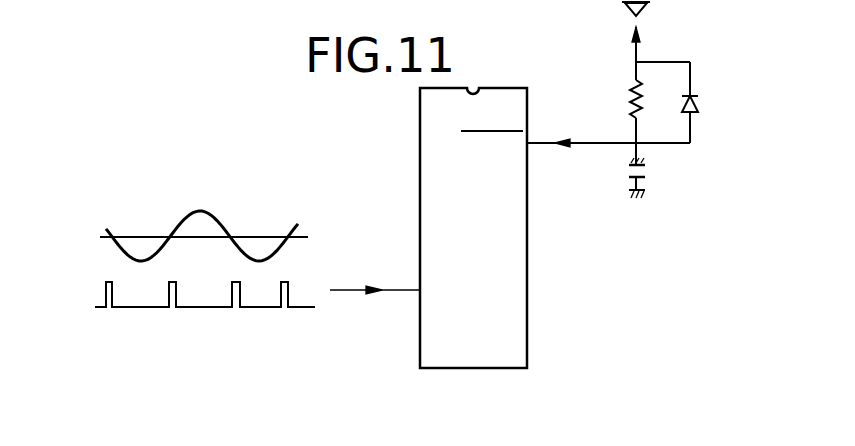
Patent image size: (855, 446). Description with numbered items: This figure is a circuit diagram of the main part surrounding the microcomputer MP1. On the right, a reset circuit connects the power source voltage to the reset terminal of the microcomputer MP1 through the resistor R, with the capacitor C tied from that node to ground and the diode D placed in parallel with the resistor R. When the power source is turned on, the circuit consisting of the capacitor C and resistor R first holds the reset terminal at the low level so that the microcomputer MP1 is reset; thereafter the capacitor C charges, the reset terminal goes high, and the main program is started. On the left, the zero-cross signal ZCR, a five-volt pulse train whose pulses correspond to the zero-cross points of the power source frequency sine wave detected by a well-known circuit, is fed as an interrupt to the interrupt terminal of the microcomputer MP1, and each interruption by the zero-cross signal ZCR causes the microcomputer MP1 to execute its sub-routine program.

The microcomputer MP1 is at (473, 228).
The resistor R is at (643, 100).
The capacitor C is at (650, 167).
The diode D is at (700, 101).
The zero-cross signal ZCR is at (231, 265).